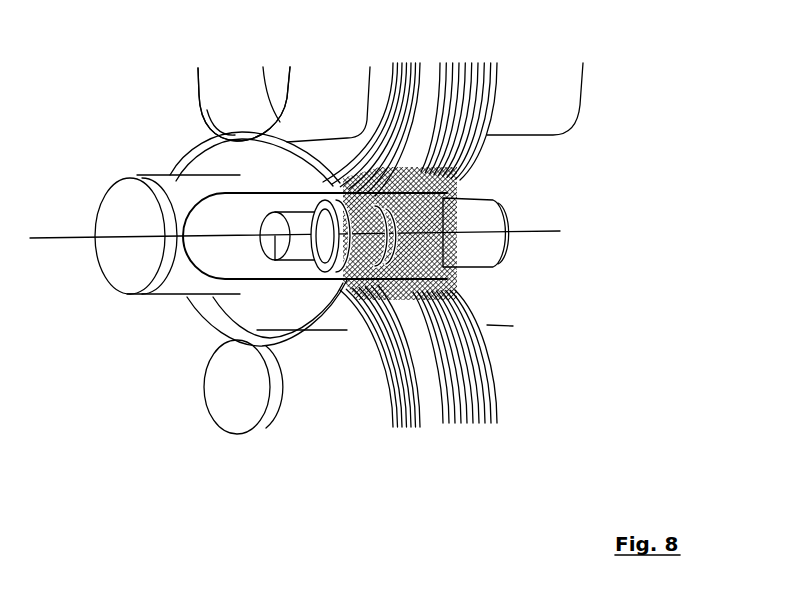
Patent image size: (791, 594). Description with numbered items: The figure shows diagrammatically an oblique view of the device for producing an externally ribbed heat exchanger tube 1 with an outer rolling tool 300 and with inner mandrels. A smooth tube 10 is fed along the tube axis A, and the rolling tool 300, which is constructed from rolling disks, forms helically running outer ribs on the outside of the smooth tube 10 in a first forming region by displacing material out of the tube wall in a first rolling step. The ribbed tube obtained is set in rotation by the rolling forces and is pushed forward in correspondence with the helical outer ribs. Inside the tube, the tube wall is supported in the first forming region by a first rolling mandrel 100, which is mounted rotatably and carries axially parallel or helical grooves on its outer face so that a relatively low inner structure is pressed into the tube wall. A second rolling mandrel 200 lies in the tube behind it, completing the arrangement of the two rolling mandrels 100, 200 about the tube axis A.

The heat exchanger tube 1 is at (455, 187).
The smooth tube 10 is at (287, 143).
The first rolling mandrel 100 is at (337, 277).
The second rolling mandrel 200 is at (437, 293).
The rolling tool 300 is at (230, 385).
The tube axis A is at (311, 238).